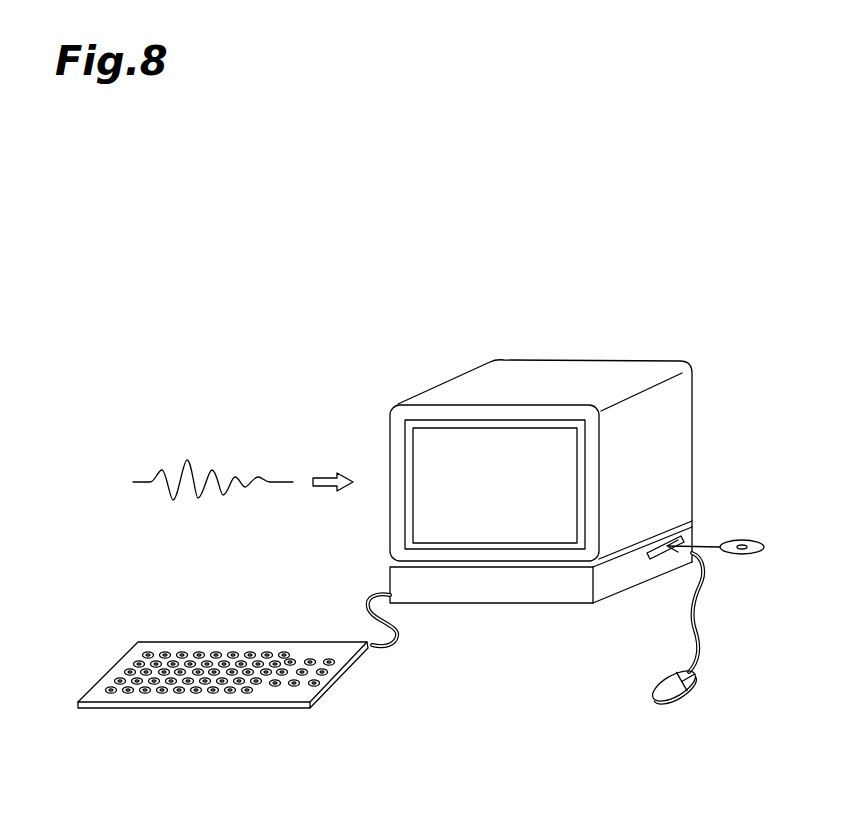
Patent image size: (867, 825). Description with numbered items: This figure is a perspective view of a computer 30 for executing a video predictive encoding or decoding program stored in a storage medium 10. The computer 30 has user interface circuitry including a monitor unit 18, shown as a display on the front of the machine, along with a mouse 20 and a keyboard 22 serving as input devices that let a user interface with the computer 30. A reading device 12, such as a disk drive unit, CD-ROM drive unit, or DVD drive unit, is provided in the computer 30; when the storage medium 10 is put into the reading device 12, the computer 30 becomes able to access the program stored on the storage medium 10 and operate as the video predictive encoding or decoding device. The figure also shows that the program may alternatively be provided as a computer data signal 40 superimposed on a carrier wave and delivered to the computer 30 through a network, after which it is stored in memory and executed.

The storage medium 10 is at (741, 556).
The reading device 12 is at (657, 558).
The monitor unit 18 is at (418, 468).
The mouse 20 is at (661, 707).
The keyboard 22 is at (283, 642).
The computer 30 is at (456, 359).
The computer data signal 40 is at (183, 456).